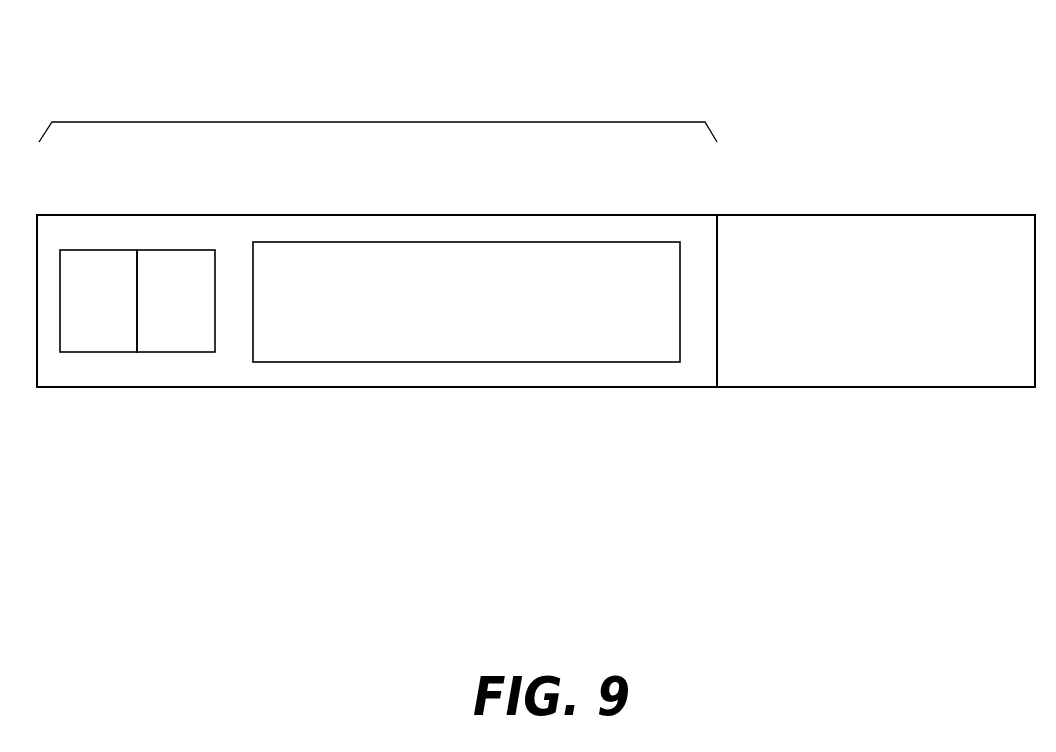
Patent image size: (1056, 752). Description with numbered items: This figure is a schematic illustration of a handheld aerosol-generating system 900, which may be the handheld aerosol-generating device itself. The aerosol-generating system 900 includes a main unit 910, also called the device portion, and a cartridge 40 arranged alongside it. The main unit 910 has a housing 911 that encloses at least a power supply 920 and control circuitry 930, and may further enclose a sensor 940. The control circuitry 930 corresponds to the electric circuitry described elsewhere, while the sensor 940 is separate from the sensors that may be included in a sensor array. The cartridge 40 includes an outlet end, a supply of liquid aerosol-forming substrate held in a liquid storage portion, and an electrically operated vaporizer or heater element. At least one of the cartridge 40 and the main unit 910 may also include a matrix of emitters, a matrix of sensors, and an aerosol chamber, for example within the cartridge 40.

The aerosol-generating system 900 is at (627, 98).
The main unit 910 is at (395, 121).
The housing 911 is at (283, 215).
The cartridge 40 is at (873, 215).
The power supply 920 is at (503, 352).
The control circuitry 930 is at (185, 340).
The sensor 940 is at (88, 340).